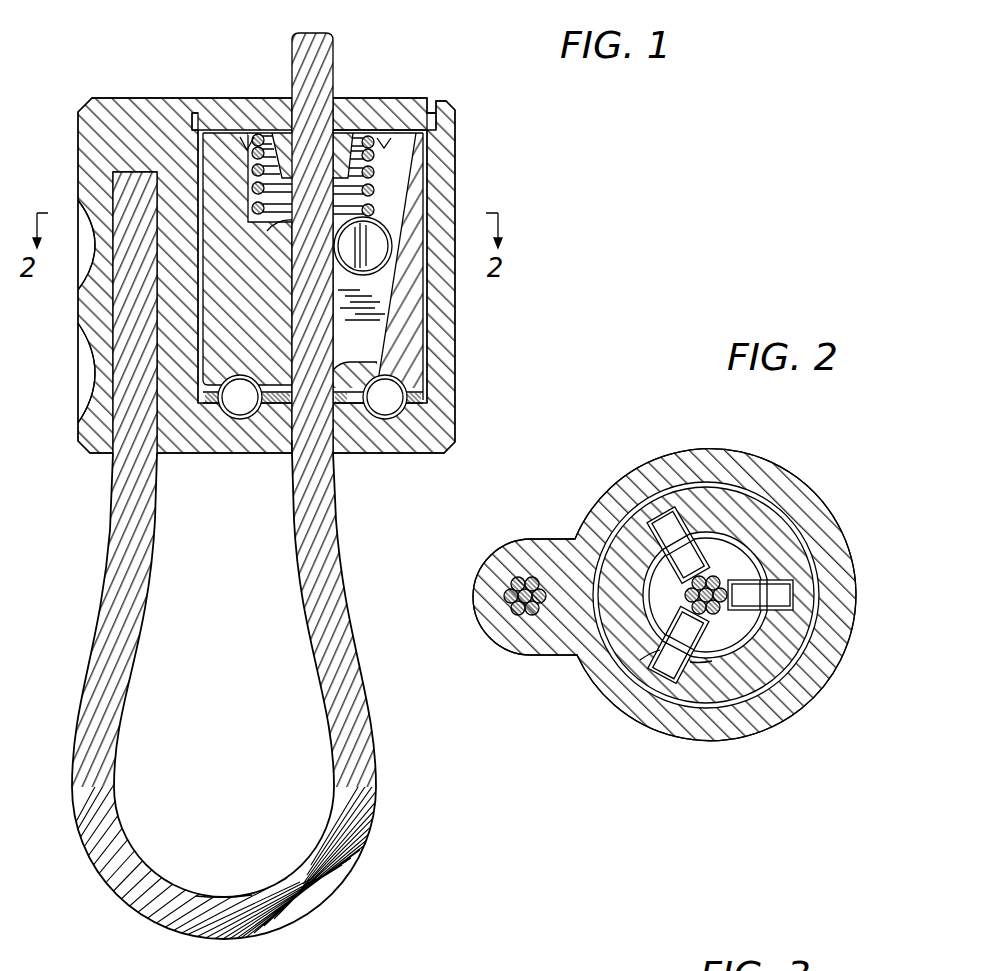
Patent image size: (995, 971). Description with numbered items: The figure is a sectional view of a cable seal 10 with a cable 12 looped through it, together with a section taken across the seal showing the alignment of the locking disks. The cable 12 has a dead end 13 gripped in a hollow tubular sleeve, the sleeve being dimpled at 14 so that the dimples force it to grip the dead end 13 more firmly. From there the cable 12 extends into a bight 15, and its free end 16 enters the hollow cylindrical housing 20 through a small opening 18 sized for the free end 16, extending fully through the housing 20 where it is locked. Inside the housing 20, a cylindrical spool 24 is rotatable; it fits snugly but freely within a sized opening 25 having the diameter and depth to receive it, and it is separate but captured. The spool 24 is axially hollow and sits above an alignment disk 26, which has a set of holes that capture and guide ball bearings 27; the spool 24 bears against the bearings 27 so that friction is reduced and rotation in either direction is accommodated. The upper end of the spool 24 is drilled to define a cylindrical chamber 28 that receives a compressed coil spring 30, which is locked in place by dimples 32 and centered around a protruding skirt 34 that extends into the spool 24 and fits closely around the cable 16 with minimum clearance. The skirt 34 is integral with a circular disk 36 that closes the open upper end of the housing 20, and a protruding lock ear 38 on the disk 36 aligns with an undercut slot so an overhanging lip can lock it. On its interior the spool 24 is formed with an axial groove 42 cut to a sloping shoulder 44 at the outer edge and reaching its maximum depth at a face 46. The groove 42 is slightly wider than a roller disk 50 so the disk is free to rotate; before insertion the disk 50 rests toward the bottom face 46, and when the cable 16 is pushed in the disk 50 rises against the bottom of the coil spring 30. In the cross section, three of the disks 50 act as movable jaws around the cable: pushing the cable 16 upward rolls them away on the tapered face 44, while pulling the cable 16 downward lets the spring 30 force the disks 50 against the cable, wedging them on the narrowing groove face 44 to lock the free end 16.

In FIG. 1, the cable seal 10 is at (569, 231).
In FIG. 1, the cable 12 is at (154, 543).
In FIG. 1, the dead end 13 is at (140, 170).
In FIG. 2, the dead end 13 is at (511, 599).
In FIG. 1, the dimpling 14 is at (82, 212).
In FIG. 1, the bight 15 is at (217, 896).
In FIG. 1, the free end 16 is at (333, 40).
In FIG. 2, the free end 16 is at (720, 575).
In FIG. 1, the small opening 18 is at (290, 455).
In FIG. 1, the hollow cylindrical housing 20 is at (450, 440).
In FIG. 2, the hollow cylindrical housing 20 is at (757, 458).
In FIG. 1, the cylindrical spool 24 is at (415, 223).
In FIG. 2, the cylindrical spool 24 is at (794, 650).
In FIG. 1, the sized opening 25 is at (218, 152).
In FIG. 1, the alignment disk 26 is at (427, 398).
In FIG. 1, the ball bearings 27 is at (232, 420).
In FIG. 1, the cylindrical chamber 28 is at (240, 100).
In FIG. 1, the coil spring 30 is at (249, 128).
In FIG. 2, the coil spring 30 is at (747, 645).
In FIG. 1, the dimples 32 is at (375, 128).
In FIG. 1, the protruding skirt 34 is at (405, 175).
In FIG. 1, the circular disk 36 is at (412, 108).
In FIG. 1, the lock ear 38 is at (437, 122).
In FIG. 1, the axial groove 42 is at (380, 330).
In FIG. 2, the axial groove 42 is at (655, 622).
In FIG. 1, the sloping shoulder 44 is at (392, 295).
In FIG. 2, the sloping shoulder 44 is at (705, 690).
In FIG. 1, the face 46 is at (385, 360).
In FIG. 1, the roller disk 50 is at (375, 252).
In FIG. 2, the roller disk 50 is at (667, 520).